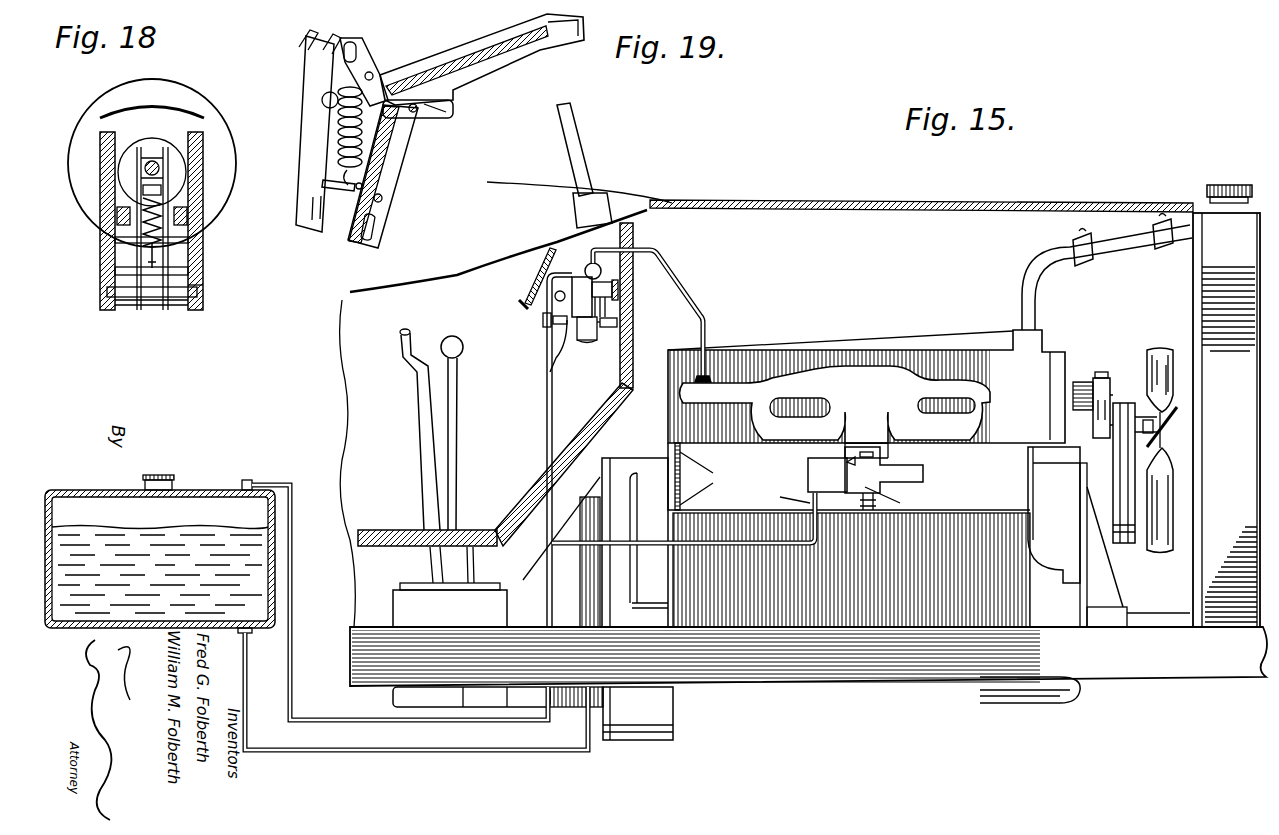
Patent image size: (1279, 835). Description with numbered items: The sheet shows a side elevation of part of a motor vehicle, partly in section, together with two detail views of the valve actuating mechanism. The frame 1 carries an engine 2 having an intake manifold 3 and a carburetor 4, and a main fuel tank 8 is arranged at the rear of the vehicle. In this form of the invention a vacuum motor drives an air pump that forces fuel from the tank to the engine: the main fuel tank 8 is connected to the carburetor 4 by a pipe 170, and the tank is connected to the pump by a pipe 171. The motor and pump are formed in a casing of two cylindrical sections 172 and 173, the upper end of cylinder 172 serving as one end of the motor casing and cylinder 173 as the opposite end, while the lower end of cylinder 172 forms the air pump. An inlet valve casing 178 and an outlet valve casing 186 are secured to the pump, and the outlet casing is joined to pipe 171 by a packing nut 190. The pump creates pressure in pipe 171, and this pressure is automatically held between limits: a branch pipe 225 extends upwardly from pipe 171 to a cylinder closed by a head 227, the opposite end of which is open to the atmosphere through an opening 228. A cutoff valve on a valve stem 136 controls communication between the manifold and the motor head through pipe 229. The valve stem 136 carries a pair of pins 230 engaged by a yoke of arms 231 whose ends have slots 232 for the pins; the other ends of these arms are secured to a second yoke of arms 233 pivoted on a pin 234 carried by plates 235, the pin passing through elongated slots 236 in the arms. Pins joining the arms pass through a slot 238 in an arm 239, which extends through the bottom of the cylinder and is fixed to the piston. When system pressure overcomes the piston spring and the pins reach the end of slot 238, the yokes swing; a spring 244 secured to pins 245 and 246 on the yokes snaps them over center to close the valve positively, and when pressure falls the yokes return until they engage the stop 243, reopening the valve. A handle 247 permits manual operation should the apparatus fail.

In FIG. 15, the frame 1 is at (808, 656).
In FIG. 15, the engine 2 is at (951, 350).
In FIG. 15, the intake manifold 3 is at (835, 412).
In FIG. 15, the carburetor 4 is at (865, 478).
In FIG. 15, the main fuel tank 8 is at (196, 492).
In FIG. 18, the valve stem 136 is at (154, 160).
In FIG. 15, the pipe 170 is at (493, 752).
In FIG. 15, the pipe 171 is at (340, 712).
In FIG. 15, the cylindrical section 172 is at (616, 308).
In FIG. 15, the cylindrical section 173 is at (586, 343).
In FIG. 15, the valve casing 178 is at (614, 323).
In FIG. 15, the valve casing 186 is at (553, 352).
In FIG. 15, the packing nut 190 is at (545, 332).
In FIG. 15, the branch pipe 225 is at (544, 302).
In FIG. 15, the head 227 is at (588, 268).
In FIG. 18, the opening 228 is at (112, 122).
In FIG. 15, the pipe 229 is at (718, 290).
In FIG. 18, the pins 230 is at (172, 158).
In FIG. 18, the arms 231 is at (168, 172).
In FIG. 19, the arms 231 is at (372, 70).
In FIG. 19, the slots 232 is at (352, 42).
In FIG. 18, the arms 233 is at (195, 308).
In FIG. 19, the arms 233 is at (390, 184).
In FIG. 18, the pin 234 is at (160, 298).
In FIG. 18, the plates 235 is at (104, 272).
In FIG. 19, the elongated slots 236 is at (376, 234).
In FIG. 19, the slot 238 is at (416, 112).
In FIG. 18, the arm 239 is at (107, 210).
In FIG. 19, the arm 239 is at (490, 75).
In FIG. 18, the stop 243 is at (118, 216).
In FIG. 18, the spring 244 is at (135, 257).
In FIG. 19, the spring 244 is at (312, 142).
In FIG. 18, the pin 245 is at (148, 296).
In FIG. 19, the pin 245 is at (352, 195).
In FIG. 18, the pin 246 is at (204, 218).
In FIG. 15, the handle 247 is at (555, 296).